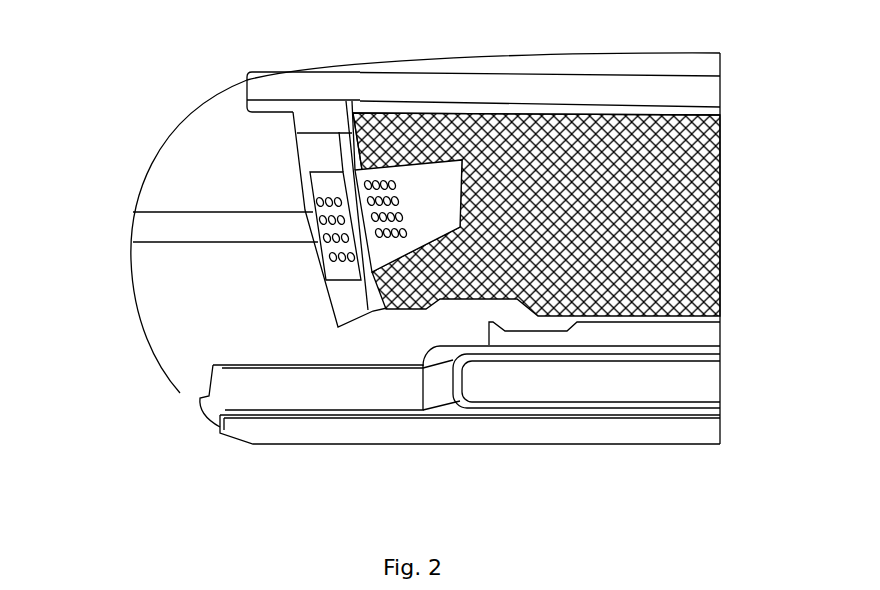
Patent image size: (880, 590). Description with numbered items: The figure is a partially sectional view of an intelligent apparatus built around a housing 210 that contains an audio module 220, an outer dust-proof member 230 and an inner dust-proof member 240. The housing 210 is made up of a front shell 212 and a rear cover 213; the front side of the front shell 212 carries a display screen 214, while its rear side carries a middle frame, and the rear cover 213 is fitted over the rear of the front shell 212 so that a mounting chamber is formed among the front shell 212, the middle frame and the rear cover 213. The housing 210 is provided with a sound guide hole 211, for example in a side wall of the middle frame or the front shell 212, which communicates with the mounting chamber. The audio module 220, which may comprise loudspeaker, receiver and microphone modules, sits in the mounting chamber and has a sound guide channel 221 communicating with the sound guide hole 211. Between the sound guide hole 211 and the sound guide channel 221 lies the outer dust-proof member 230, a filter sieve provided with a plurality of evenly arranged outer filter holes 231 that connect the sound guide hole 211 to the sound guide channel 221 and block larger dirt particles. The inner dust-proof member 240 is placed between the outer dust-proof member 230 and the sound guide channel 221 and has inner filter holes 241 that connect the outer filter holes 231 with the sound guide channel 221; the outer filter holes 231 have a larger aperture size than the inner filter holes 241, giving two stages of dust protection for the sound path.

The housing 210 is at (134, 141).
The sound guide hole 211 is at (143, 235).
The front shell 212 is at (183, 373).
The rear cover 213 is at (547, 438).
The display screen 214 is at (606, 53).
The audio module 220 is at (722, 173).
The sound guide channel 221 is at (434, 164).
The outer dust-proof member 230 is at (333, 178).
The outer filter hole 231 is at (335, 255).
The inner dust-proof member 240 is at (395, 165).
The inner filter hole 241 is at (391, 232).